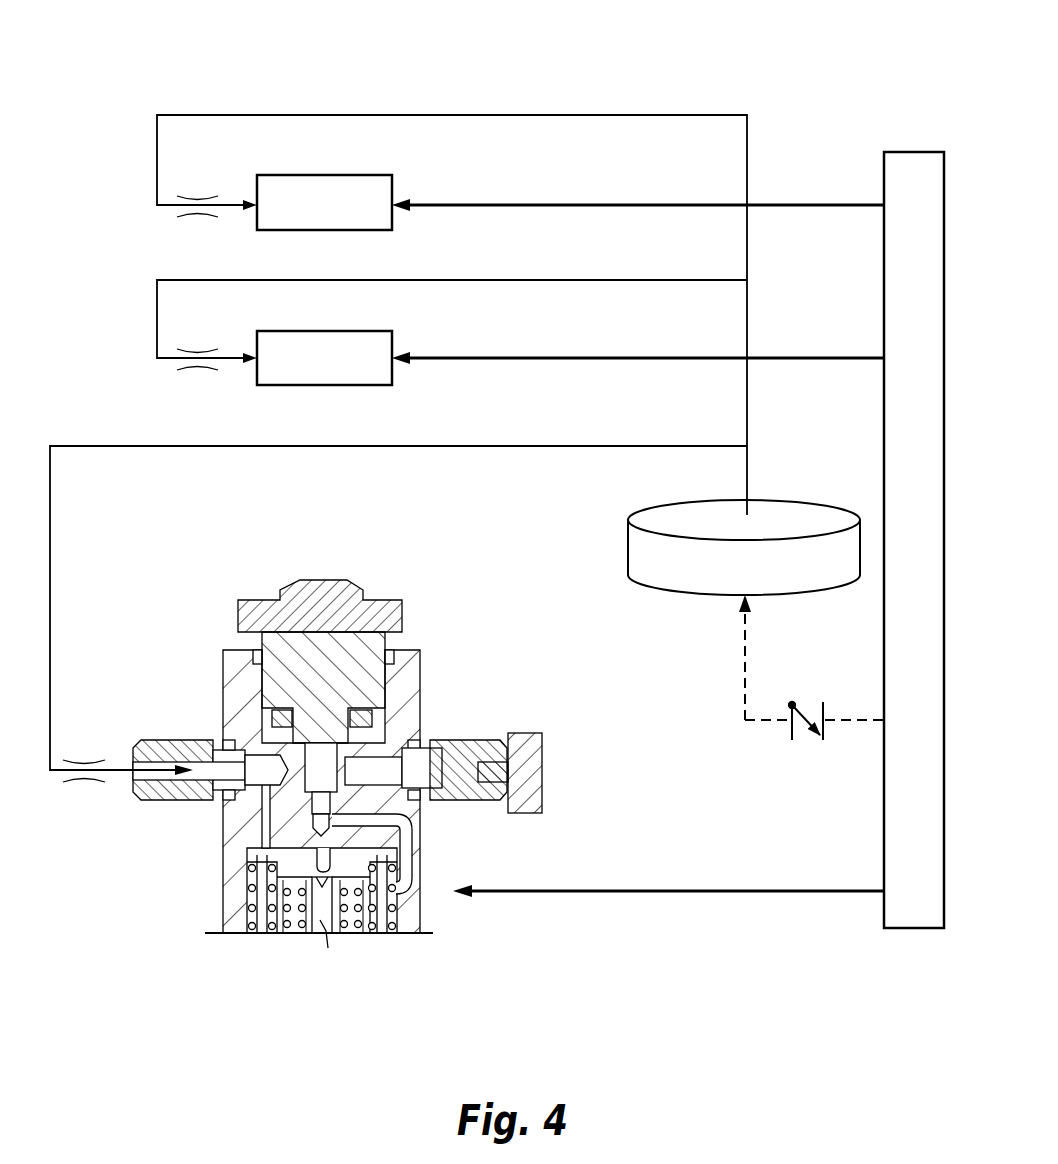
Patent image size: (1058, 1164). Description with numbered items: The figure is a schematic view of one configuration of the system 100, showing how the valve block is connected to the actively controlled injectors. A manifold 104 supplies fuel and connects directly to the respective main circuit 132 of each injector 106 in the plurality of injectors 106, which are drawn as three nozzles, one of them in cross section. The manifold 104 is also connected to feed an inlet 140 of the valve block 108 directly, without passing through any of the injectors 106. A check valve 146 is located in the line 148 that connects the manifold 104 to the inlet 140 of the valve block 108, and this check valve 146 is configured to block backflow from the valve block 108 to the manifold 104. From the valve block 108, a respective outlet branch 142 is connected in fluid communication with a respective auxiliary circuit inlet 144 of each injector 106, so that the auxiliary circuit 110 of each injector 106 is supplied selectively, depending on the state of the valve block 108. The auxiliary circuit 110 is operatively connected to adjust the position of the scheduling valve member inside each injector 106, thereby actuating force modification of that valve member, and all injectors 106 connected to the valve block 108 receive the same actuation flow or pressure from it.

The system 100 is at (88, 118).
The manifold 104 is at (915, 152).
The force modification injector 106 is at (367, 231).
The valve block 108 is at (822, 513).
The auxiliary circuit 110 is at (176, 457).
The main circuit 132 is at (815, 203).
The inlet 140 is at (730, 606).
The outlet branch 142 is at (157, 160).
The auxiliary circuit inlet 144 is at (193, 191).
The check valve 146 is at (812, 690).
The line 148 is at (745, 708).